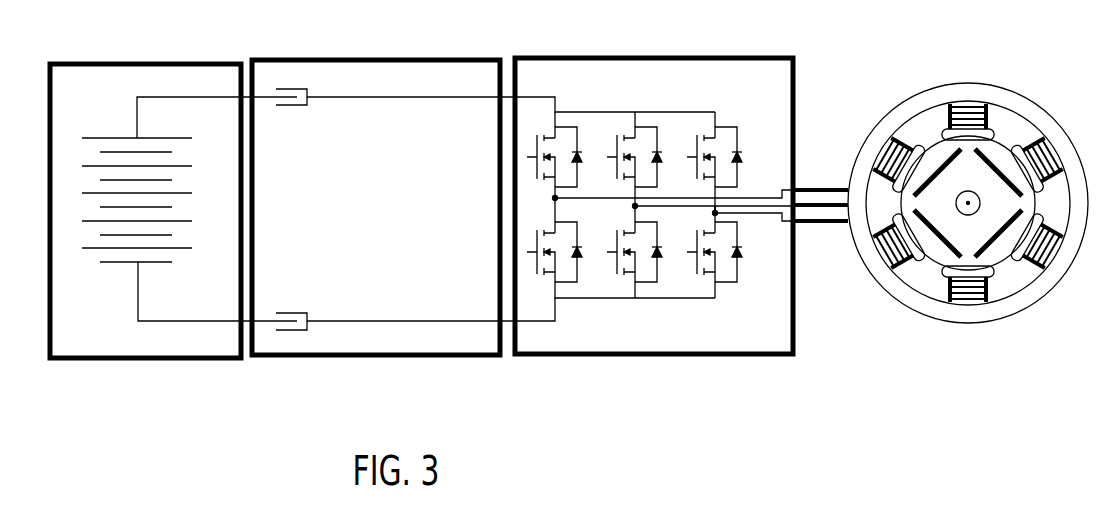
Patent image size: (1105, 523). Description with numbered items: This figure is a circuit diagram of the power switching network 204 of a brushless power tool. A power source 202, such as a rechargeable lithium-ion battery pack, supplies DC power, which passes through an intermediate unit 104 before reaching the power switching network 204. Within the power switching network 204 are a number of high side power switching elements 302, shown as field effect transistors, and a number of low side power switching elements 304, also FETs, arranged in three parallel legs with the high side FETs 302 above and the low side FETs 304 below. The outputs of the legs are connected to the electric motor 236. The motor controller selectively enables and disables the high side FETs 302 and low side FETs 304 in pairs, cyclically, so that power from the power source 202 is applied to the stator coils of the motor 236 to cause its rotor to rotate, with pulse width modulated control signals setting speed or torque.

The power source 202 is at (150, 63).
The electrical distribution unit 104 is at (386, 58).
The power switching network 204 is at (681, 181).
The high side power switching elements 302 is at (580, 147).
The low side power switching elements 304 is at (580, 245).
The electric motor 236 is at (968, 323).